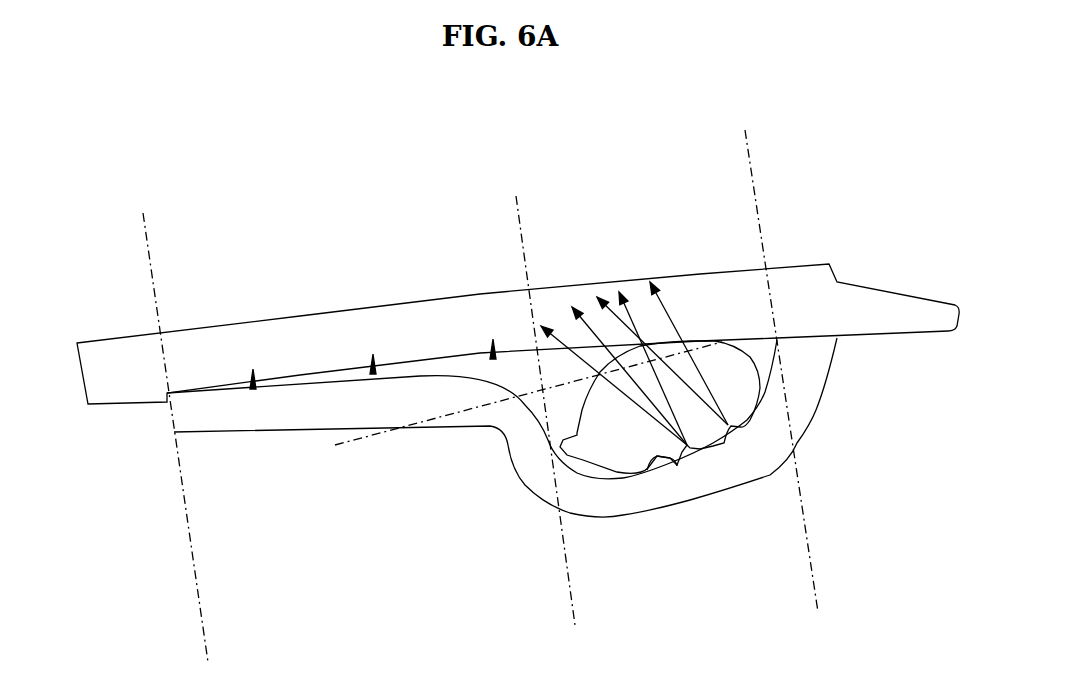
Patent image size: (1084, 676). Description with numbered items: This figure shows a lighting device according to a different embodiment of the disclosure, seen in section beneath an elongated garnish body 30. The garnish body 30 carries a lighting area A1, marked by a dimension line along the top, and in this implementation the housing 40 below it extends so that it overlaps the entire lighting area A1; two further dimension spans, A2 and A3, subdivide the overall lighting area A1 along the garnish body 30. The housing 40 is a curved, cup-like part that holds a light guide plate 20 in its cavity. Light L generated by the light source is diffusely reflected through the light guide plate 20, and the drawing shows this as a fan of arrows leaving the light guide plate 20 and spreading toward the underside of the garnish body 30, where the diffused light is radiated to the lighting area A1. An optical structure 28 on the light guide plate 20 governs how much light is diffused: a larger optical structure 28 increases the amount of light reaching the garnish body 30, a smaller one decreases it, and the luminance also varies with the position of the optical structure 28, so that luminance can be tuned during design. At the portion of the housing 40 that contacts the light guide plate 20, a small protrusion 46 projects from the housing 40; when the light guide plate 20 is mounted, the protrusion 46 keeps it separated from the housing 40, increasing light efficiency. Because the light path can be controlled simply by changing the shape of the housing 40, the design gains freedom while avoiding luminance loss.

The light guide plate 20 is at (750, 390).
The optical structure 28 is at (793, 462).
The garnish body 30 is at (120, 363).
The housing 40 is at (248, 410).
The protrusion 46 is at (668, 462).
The light L is at (728, 425).
The lighting area A1 is at (143, 217).
The lamp width A2 is at (758, 200).
The bracket width A3 is at (516, 200).